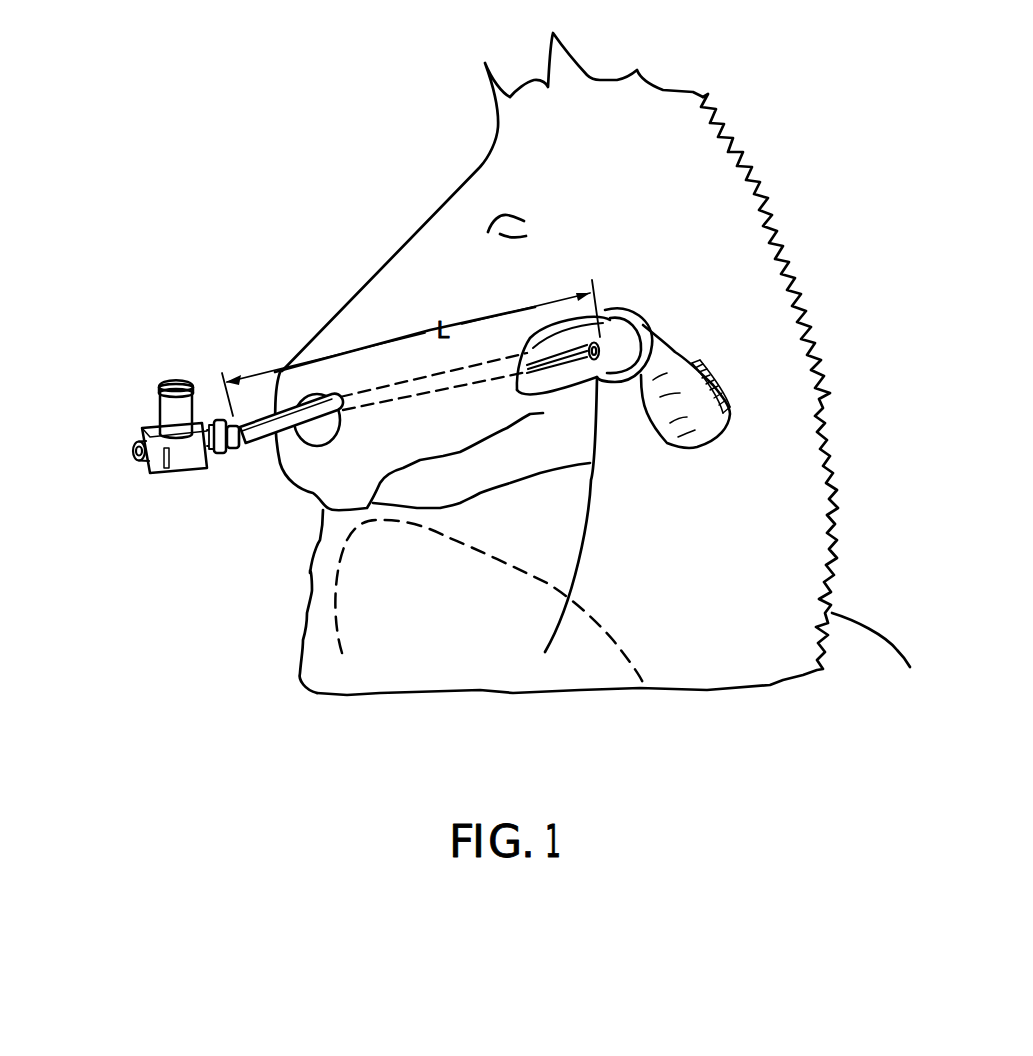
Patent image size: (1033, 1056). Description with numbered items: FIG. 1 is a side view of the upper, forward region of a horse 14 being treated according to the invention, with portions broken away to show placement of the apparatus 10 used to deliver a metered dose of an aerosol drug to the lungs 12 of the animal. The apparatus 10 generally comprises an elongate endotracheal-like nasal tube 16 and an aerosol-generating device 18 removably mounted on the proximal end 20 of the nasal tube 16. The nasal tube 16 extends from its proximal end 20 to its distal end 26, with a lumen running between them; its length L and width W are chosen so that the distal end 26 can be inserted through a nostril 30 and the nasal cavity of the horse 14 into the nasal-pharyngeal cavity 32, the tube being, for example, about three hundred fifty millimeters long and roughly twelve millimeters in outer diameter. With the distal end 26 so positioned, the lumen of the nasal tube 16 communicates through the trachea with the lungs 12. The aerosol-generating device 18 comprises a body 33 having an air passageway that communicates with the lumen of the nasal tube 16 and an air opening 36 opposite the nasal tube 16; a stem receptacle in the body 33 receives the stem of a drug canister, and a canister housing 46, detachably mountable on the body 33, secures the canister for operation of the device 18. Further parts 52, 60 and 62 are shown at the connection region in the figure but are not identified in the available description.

The apparatus 10 is at (136, 348).
The lungs 12 is at (342, 653).
The horse 14 is at (767, 220).
The endotracheal-like nasal tube 16 is at (265, 455).
The aerosol-generating device 18 is at (128, 432).
The proximal end 20 is at (230, 452).
The distal end 26 is at (583, 407).
The nostril 30 is at (327, 441).
The nasal-pharyngeal cavity 32 is at (623, 345).
The body 33 is at (185, 477).
The air opening 36 is at (136, 457).
The canister housing 46 is at (163, 405).
The cap 52 is at (177, 380).
The coupling nut 60 is at (221, 455).
The coupling flange 62 is at (221, 428).